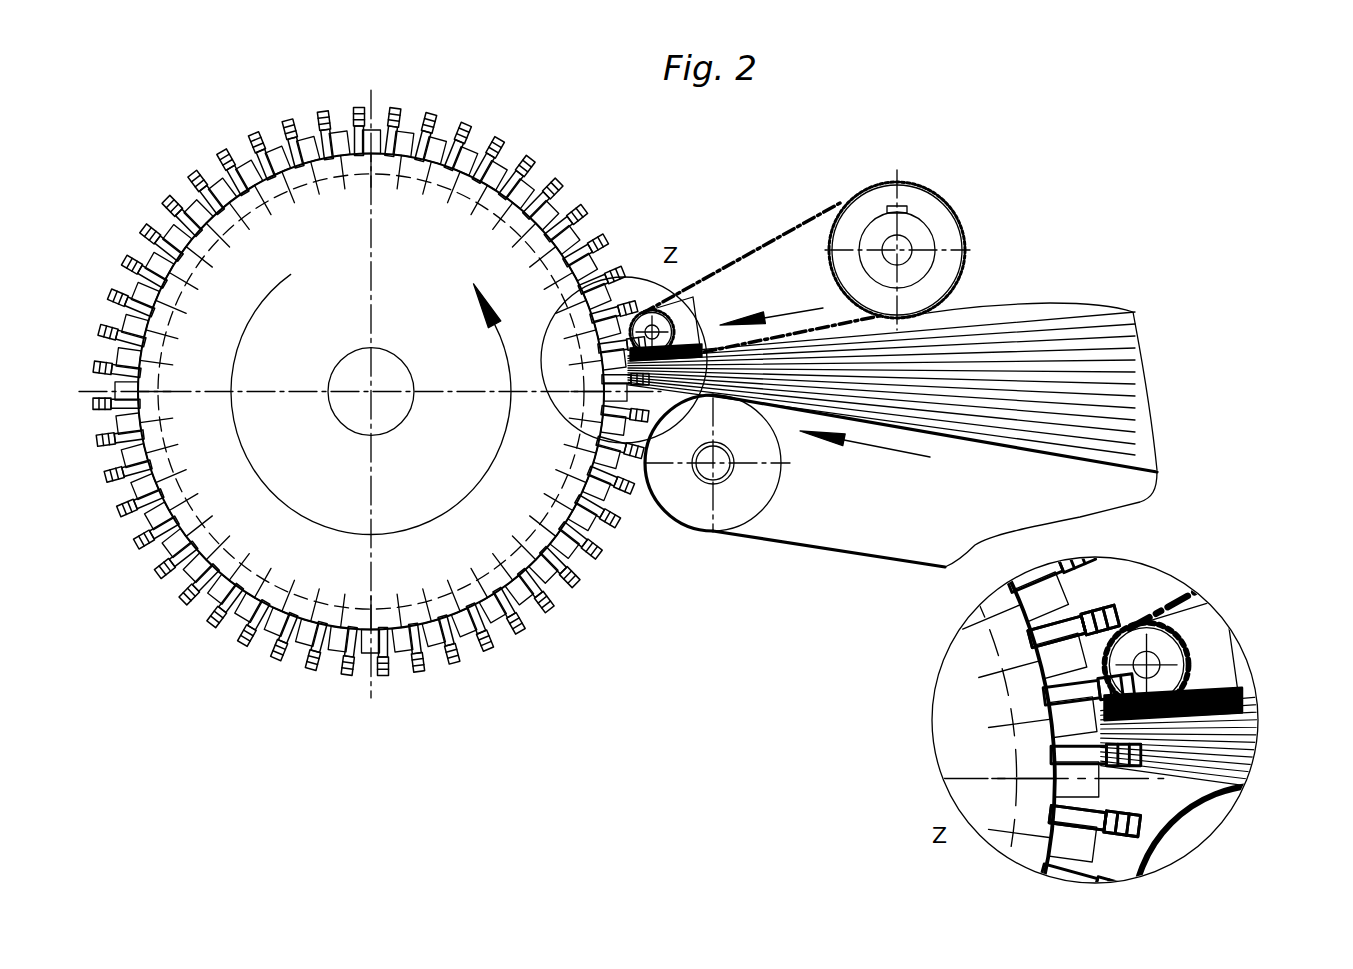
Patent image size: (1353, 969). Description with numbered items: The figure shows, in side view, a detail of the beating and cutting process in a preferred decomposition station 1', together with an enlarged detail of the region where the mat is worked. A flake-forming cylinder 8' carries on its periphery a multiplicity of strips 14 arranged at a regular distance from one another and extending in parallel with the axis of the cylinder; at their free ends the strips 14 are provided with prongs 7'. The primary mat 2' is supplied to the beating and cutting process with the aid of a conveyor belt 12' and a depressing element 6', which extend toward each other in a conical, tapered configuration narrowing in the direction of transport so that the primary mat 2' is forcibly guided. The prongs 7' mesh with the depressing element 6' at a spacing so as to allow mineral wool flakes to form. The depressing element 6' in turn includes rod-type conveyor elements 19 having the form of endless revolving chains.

The decomposition station 1' is at (375, 410).
The primary mat 2' is at (990, 615).
The depressing element 6' is at (967, 497).
The prongs 7' is at (780, 742).
The flake-forming cylinder 8' is at (221, 639).
The conveyor belt 12' is at (901, 515).
The strips 14 is at (262, 632).
The rod-type conveyor elements 19 is at (755, 248).